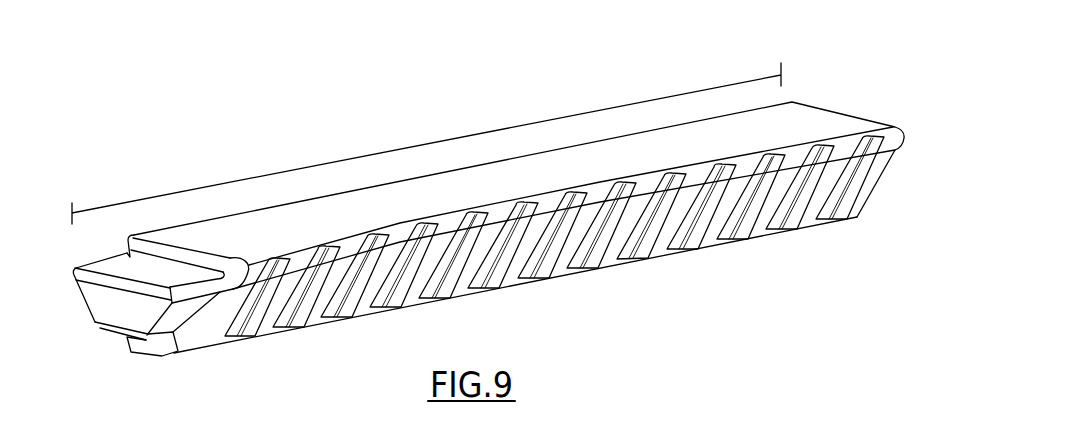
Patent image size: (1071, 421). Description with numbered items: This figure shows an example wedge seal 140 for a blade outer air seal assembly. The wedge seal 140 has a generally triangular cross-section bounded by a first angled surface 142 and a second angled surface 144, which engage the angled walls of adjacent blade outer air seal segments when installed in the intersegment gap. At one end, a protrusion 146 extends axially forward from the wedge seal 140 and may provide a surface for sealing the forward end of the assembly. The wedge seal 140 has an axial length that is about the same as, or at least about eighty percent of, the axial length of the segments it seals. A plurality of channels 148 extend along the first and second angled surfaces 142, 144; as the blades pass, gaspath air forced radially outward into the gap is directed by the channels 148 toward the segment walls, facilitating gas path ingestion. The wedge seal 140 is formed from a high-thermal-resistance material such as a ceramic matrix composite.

The wedge seal 140 is at (486, 196).
The first angled surface 142 is at (128, 253).
The second angled surface 144 is at (321, 300).
The protrusion 146 is at (113, 312).
The channels 148 is at (501, 257).